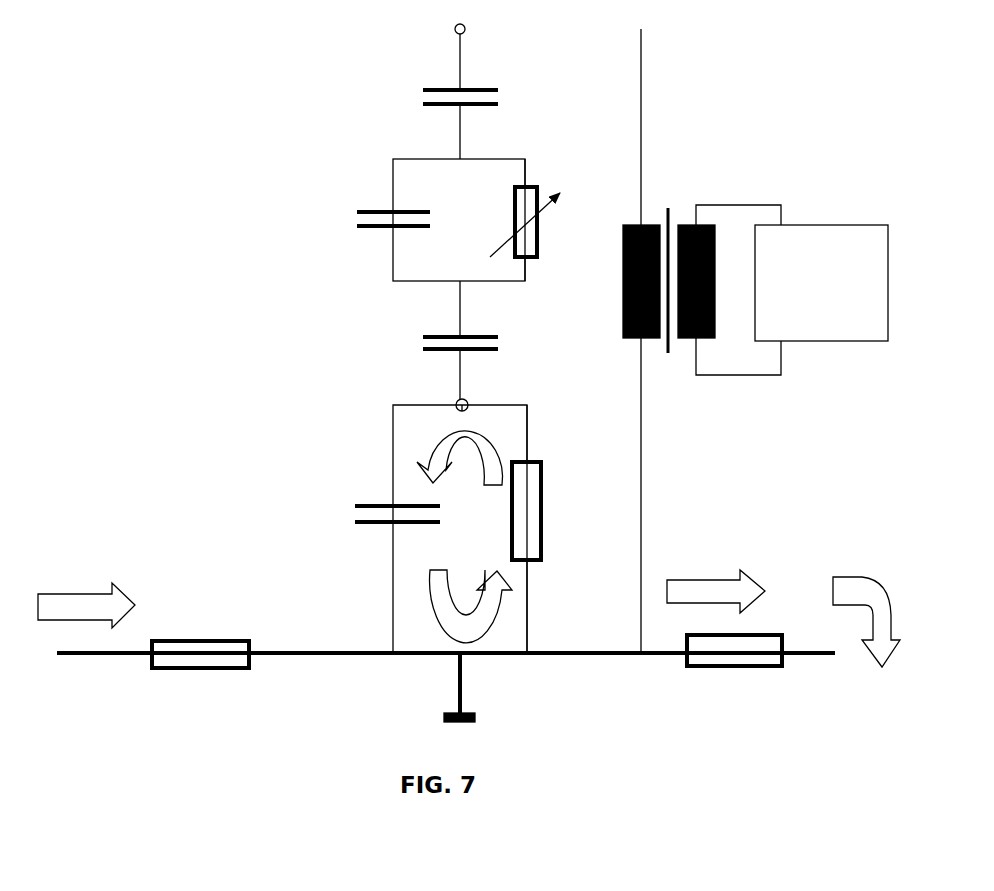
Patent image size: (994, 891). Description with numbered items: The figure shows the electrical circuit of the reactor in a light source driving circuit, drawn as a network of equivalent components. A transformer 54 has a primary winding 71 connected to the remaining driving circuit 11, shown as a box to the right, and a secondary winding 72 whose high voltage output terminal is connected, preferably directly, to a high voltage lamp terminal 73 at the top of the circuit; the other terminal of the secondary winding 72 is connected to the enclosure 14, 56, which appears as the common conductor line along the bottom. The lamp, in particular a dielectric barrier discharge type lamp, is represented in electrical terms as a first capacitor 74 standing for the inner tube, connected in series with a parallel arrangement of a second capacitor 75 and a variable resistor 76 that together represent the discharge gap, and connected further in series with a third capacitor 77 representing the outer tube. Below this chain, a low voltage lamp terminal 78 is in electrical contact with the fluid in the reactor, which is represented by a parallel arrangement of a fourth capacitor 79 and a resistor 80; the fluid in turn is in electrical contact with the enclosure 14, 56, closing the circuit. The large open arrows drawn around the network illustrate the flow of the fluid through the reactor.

The load / plasma chamber 11 is at (836, 340).
The conductor line 14 is at (446, 624).
The conductor line 56 is at (345, 652).
The transformer 54 is at (675, 402).
The secondary coil 71 is at (705, 225).
The primary coil 72 is at (648, 225).
The node 73 is at (455, 31).
The capacitor 74 is at (400, 103).
The capacitor 75 is at (330, 232).
The variable resistor 76 is at (492, 232).
The capacitor 77 is at (402, 342).
The node 78 is at (470, 400).
The capacitor 79 is at (347, 510).
The resistor 80 is at (493, 527).